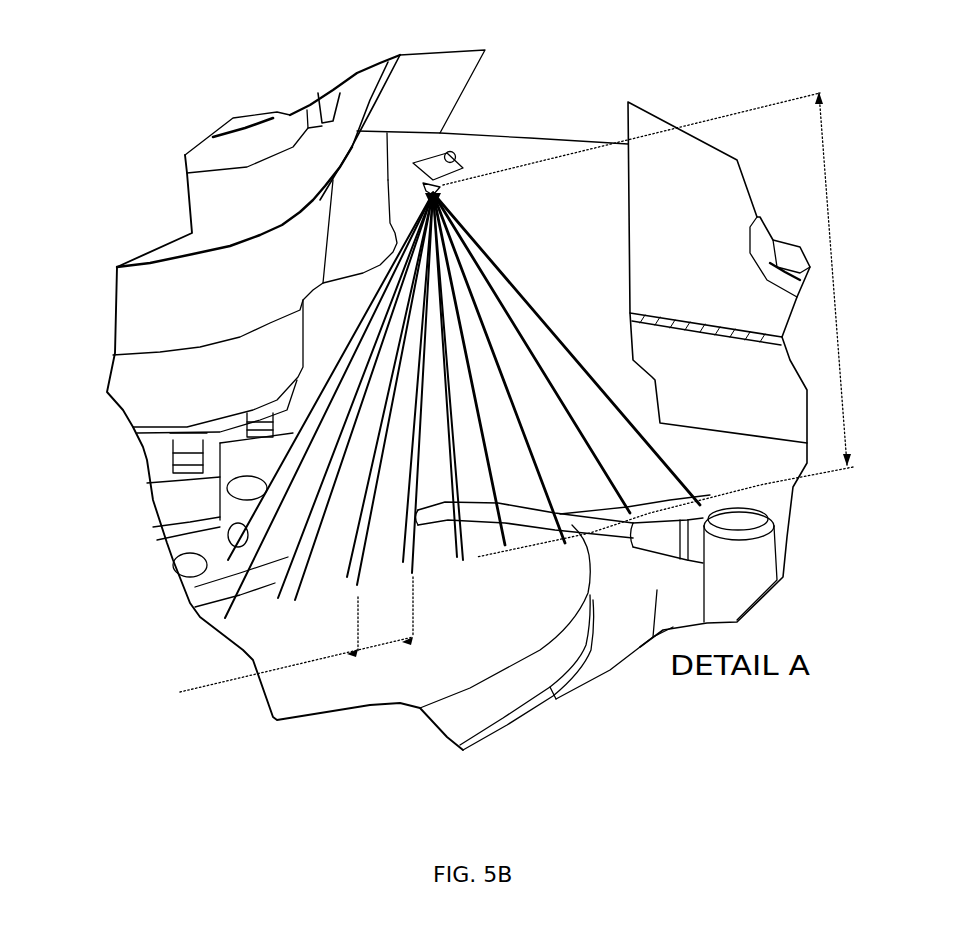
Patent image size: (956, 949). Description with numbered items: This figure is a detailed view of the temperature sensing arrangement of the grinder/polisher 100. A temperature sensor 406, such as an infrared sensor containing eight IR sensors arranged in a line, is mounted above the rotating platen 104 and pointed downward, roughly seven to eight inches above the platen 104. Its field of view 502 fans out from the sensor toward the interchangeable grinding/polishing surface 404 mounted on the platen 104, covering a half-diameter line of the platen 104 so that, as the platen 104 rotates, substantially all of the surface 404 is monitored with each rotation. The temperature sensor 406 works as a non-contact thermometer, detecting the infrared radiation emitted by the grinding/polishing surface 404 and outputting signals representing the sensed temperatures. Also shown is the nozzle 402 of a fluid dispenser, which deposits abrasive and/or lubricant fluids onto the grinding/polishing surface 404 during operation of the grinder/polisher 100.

The grinder/polisher 100 is at (442, 400).
The platen 104 is at (531, 656).
The temperature sensor 406 is at (471, 138).
The field of view 502 is at (462, 405).
The nozzle 402 is at (563, 546).
The grinding/polishing surface 404 is at (500, 621).